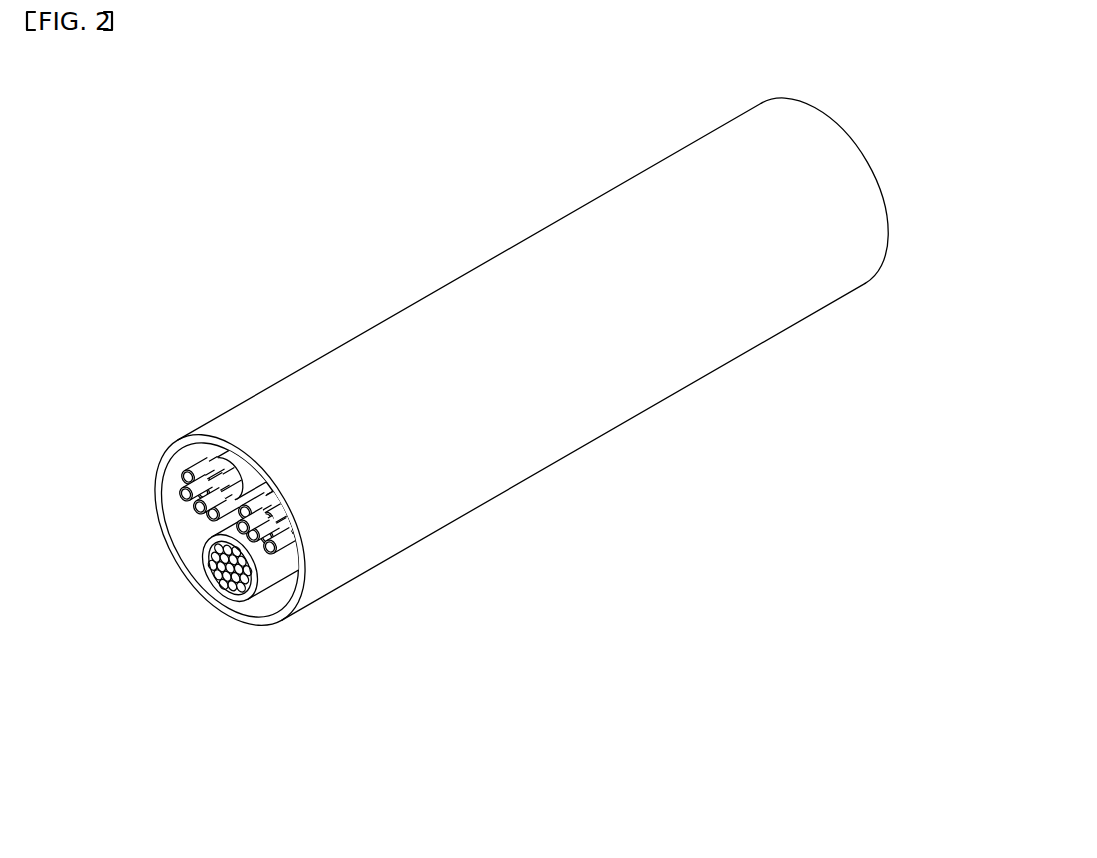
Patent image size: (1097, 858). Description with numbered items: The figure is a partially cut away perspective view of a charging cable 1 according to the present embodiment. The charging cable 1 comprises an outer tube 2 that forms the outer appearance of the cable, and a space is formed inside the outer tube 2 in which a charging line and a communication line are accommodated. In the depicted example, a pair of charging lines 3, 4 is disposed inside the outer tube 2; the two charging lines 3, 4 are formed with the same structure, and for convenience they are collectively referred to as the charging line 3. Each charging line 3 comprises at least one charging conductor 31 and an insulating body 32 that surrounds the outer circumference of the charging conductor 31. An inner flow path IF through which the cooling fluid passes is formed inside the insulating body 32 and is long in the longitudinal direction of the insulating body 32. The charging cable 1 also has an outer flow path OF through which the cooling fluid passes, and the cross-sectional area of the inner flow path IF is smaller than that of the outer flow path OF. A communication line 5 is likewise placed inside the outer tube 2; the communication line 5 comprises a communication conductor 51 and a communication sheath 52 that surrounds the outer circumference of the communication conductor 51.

The charging cable 1 is at (450, 207).
The outer tube 2 is at (197, 573).
The charging line 3 is at (242, 438).
The charging conductor 31 is at (190, 470).
The insulating body 32 is at (235, 473).
The charging line 4 is at (290, 558).
The communication line 5 is at (258, 595).
The communication conductor 51 is at (217, 591).
The communication sheath 52 is at (238, 601).
The inner flow path IF is at (199, 492).
The outer flow path OF is at (192, 539).